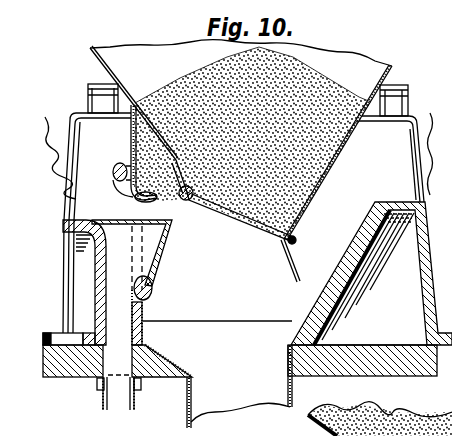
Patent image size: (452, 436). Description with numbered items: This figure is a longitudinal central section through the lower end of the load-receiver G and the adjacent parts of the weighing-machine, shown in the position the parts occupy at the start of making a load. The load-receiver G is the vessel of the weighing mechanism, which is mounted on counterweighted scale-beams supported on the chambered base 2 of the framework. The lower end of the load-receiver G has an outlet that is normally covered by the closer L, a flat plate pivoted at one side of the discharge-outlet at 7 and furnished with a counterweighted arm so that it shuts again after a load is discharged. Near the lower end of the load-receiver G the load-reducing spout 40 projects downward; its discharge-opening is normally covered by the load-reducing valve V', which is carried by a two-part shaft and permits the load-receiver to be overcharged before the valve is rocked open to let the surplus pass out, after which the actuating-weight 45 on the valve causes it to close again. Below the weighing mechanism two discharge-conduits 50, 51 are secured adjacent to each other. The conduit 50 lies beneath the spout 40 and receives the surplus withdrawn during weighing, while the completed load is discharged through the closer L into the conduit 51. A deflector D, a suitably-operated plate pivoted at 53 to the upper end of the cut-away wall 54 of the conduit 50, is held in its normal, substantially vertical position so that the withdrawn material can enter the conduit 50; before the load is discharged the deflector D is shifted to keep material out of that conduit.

The load-receiver G is at (241, 140).
The chambered base 2 is at (396, 143).
The pivot of the closer 7 is at (184, 197).
The load-reducing spout 40 is at (131, 133).
The actuating-weight 45 is at (113, 166).
The load-reducing valve V' is at (120, 202).
The closer L is at (243, 237).
The deflector D is at (166, 255).
The discharge-conduit 50 is at (118, 280).
The discharge-conduit 51 is at (238, 402).
The pivot of the deflector 53 is at (153, 290).
The cut-away wall 54 is at (143, 307).